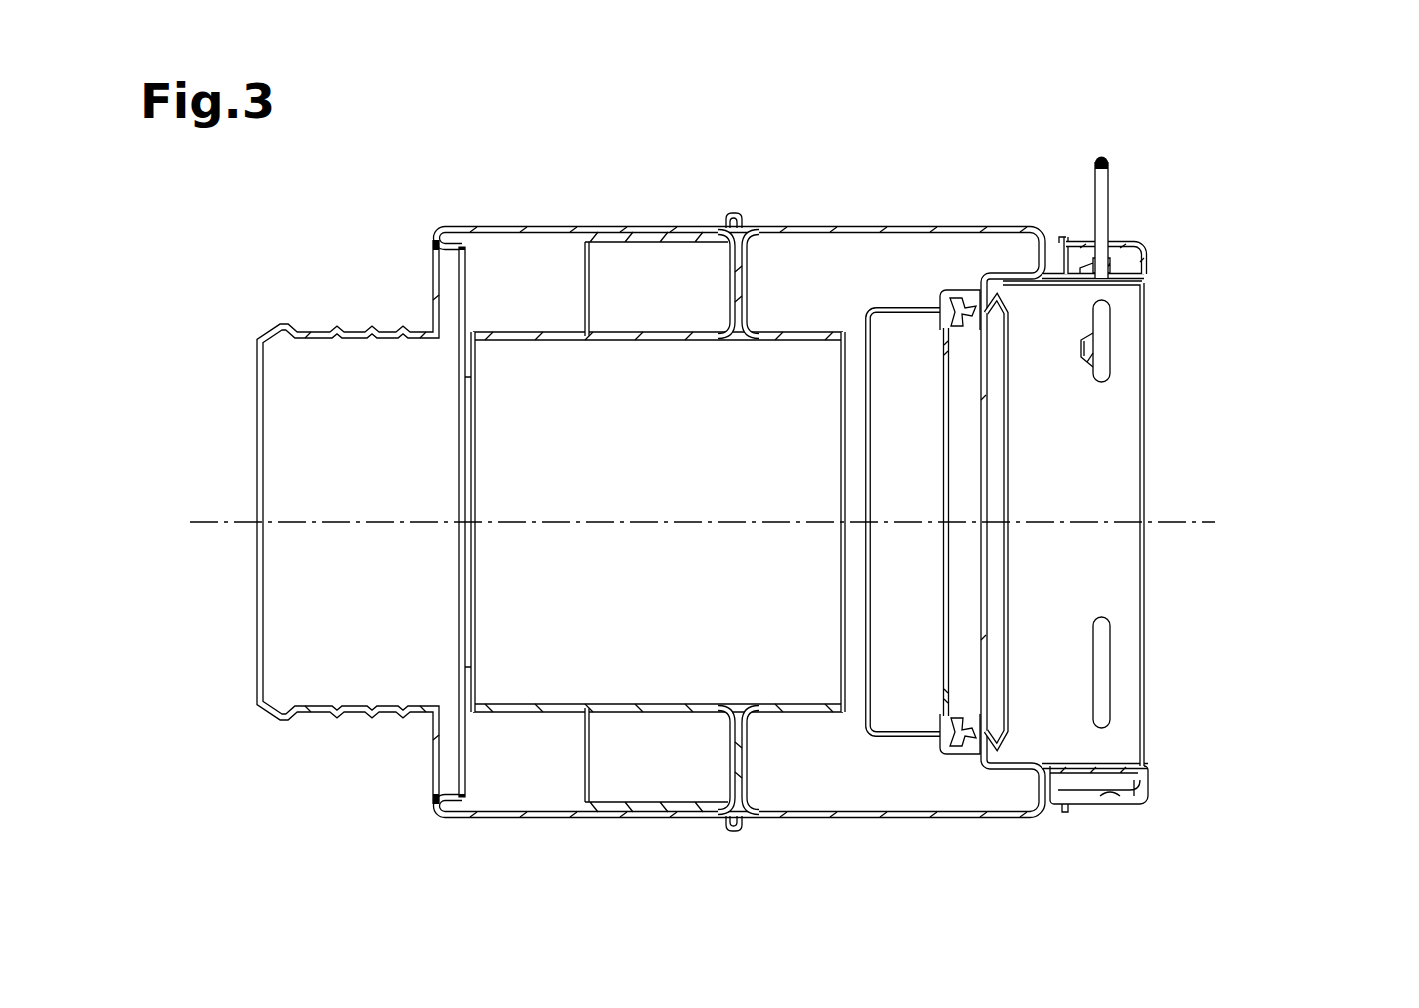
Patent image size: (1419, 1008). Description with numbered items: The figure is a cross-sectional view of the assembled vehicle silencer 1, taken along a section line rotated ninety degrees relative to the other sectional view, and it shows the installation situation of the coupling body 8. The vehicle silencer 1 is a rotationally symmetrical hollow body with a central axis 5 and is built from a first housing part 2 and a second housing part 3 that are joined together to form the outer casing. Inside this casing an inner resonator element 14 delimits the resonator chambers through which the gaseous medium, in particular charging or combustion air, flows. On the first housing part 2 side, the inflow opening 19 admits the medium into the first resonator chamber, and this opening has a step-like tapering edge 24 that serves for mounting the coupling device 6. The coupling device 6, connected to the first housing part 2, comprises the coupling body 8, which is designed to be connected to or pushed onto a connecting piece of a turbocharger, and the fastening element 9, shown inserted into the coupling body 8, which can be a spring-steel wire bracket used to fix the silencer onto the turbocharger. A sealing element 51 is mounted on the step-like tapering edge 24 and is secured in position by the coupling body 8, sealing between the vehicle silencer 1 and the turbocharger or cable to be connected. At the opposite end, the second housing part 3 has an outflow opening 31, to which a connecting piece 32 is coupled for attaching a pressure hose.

The vehicle silencer 1 is at (1290, 130).
The first housing part 2 is at (862, 232).
The second housing part 3 is at (510, 232).
The central axis 5 is at (215, 518).
The coupling device 6 is at (1135, 296).
The coupling body 8 is at (1122, 350).
The fastening element 9 is at (1110, 162).
The inner resonator element 14 is at (702, 315).
The inflow opening 19 is at (1200, 474).
The step-like tapering edge 24 is at (915, 337).
The outflow opening 31 is at (228, 548).
The connecting piece 32 is at (316, 297).
The sealing element 51 is at (968, 305).